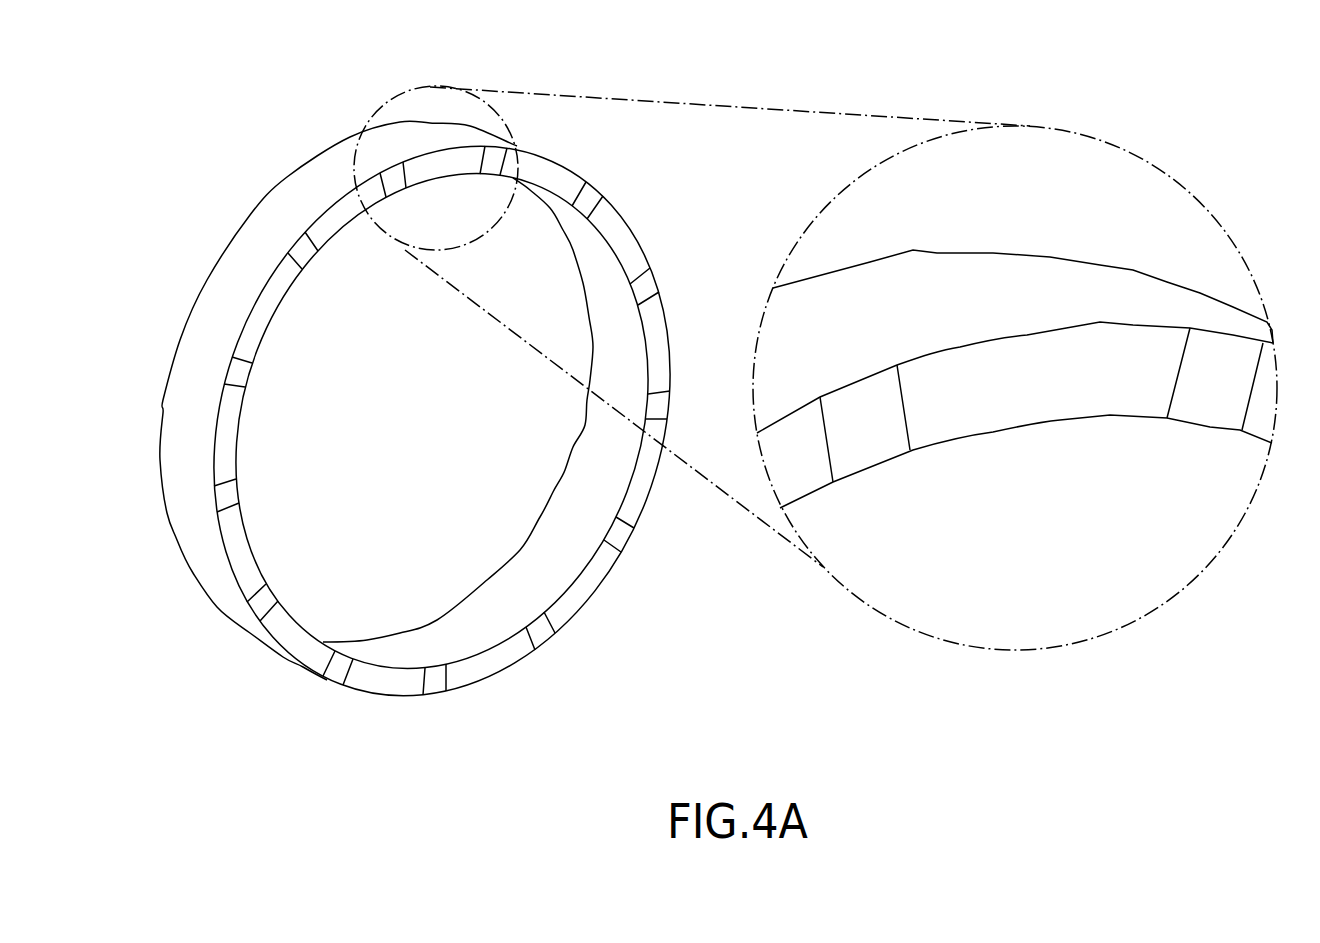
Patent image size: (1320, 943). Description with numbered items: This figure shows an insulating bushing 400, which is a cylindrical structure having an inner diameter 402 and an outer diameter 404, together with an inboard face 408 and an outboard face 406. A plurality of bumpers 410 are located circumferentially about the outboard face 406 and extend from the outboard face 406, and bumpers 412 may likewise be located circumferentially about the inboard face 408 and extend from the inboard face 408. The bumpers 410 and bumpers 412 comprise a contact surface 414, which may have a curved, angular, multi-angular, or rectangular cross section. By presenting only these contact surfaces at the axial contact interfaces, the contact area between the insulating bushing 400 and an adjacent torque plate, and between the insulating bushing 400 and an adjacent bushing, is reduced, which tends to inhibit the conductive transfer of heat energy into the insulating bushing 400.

The insulating bushing 400 is at (772, 67).
The inner diameter 402 is at (505, 587).
The outer diameter 404 is at (580, 593).
The outboard face 406 is at (275, 310).
The inboard face 408 is at (245, 232).
The bumpers 410 is at (233, 495).
The bumpers 412 is at (573, 447).
The contact surface 414 is at (860, 430).